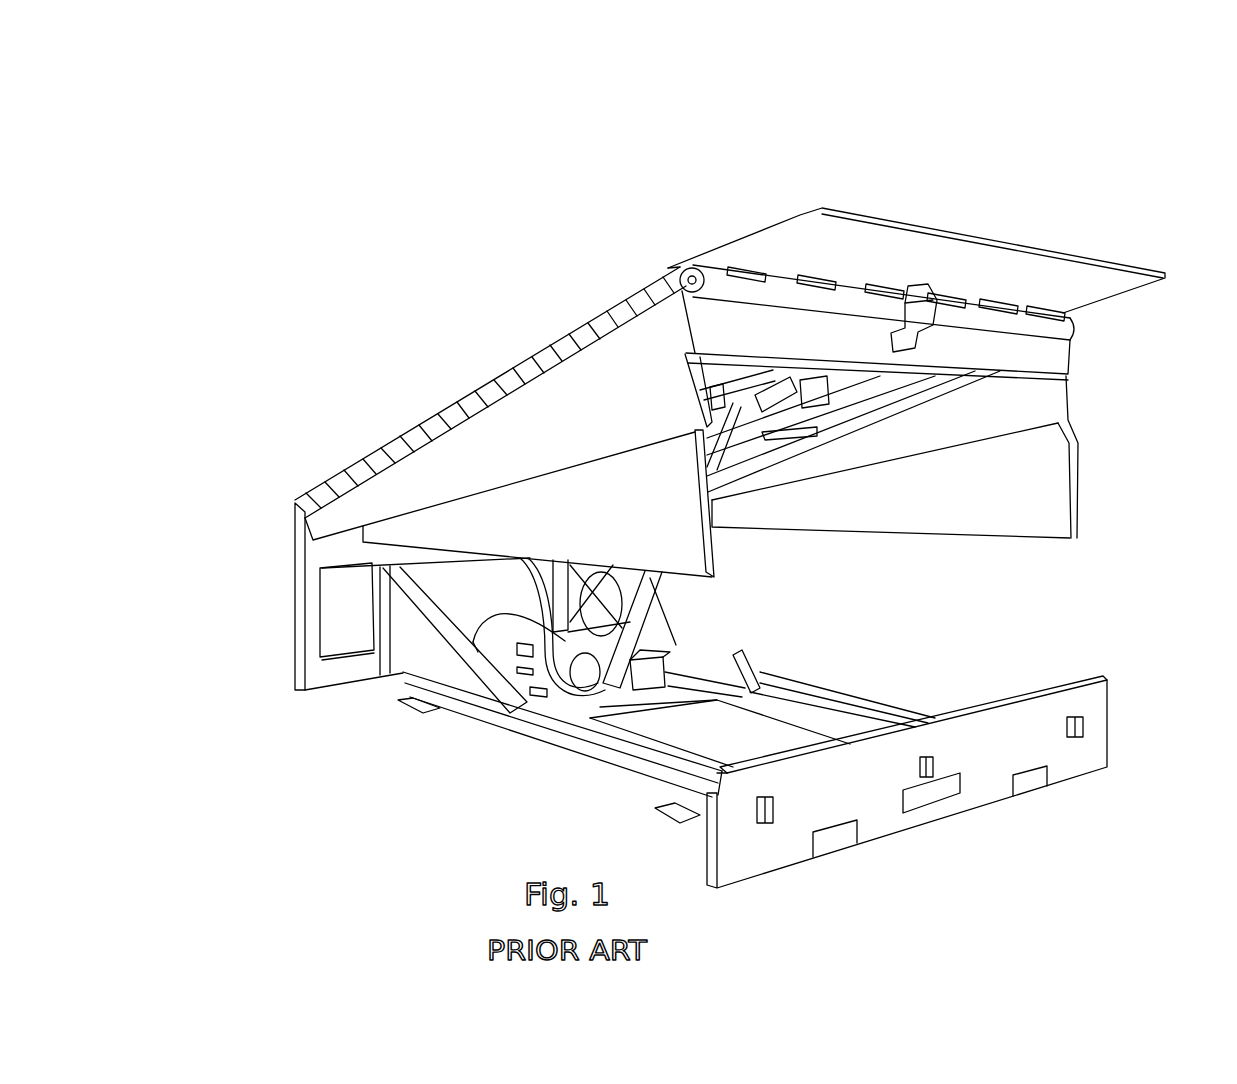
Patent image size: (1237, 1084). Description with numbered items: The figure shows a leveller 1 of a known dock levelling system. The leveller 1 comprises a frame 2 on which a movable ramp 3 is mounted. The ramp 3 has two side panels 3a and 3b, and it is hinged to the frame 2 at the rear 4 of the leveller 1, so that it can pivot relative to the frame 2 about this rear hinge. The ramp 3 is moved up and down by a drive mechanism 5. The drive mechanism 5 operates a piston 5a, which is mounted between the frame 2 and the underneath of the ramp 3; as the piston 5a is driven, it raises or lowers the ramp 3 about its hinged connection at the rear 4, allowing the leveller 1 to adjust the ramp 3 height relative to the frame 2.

The leveller 1 is at (803, 167).
The frame 2 is at (525, 733).
The ramp 3 is at (543, 350).
The side panel 3a is at (500, 433).
The side panel 3b is at (1037, 492).
The rear 4 is at (293, 508).
The drive mechanism 5 is at (523, 663).
The piston 5a is at (653, 588).